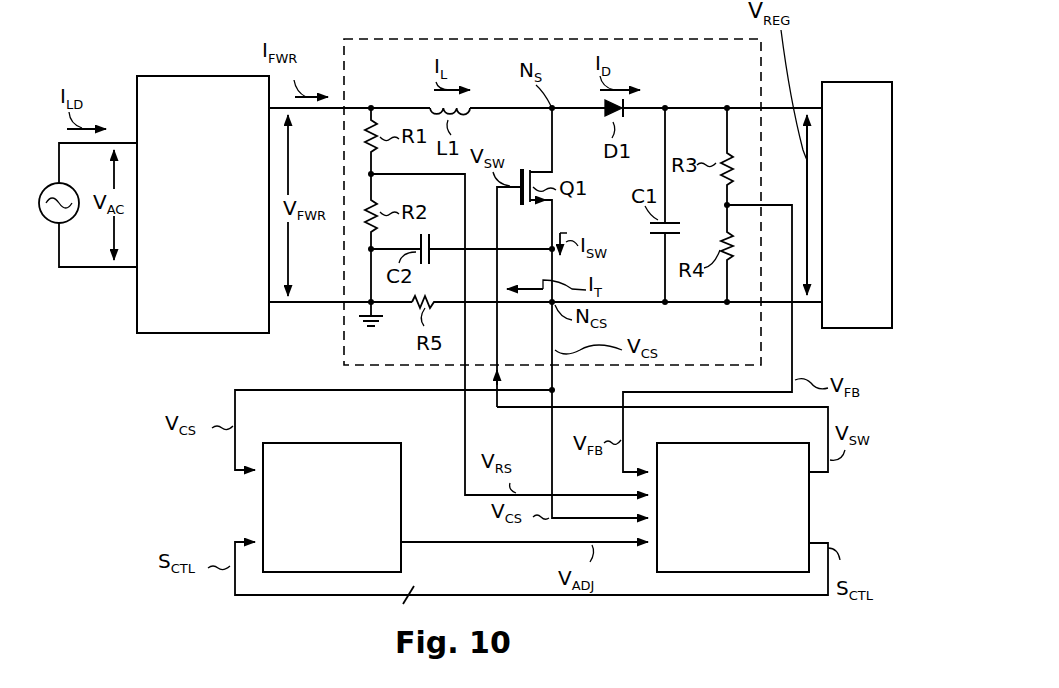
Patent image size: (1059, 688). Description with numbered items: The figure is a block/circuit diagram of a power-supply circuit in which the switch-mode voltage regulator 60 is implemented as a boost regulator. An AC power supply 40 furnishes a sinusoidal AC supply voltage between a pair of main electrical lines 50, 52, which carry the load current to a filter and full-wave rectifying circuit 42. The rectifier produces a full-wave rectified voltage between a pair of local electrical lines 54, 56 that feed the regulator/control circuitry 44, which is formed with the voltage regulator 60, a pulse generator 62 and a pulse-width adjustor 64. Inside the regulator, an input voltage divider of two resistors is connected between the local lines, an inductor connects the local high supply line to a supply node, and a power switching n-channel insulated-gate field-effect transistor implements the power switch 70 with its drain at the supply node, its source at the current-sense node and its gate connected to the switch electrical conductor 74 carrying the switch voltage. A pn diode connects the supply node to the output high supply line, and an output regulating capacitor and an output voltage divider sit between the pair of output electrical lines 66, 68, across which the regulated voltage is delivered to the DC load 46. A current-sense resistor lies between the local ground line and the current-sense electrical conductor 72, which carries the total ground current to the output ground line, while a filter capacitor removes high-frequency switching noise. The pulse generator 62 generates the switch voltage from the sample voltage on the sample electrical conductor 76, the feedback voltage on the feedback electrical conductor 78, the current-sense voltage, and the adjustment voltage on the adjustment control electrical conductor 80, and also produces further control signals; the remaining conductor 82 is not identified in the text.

The AC power supply 40 is at (50, 226).
The filter and full-wave rectifying circuit 42 is at (172, 334).
The regulator/control circuitry 44 is at (426, 425).
The DC load 46 is at (853, 82).
The main electrical line 50 is at (128, 141).
The main electrical line 52 is at (118, 269).
The local electrical line 54 is at (326, 111).
The local electrical line 56 is at (315, 304).
The switch-mode voltage regulator 60 is at (556, 38).
The pulse generator 62 is at (812, 506).
The pulse-width adjustor 64 is at (262, 504).
The output electrical line 66 is at (794, 107).
The output electrical line 68 is at (808, 305).
The power switch 70 is at (543, 160).
The current-sense electrical conductor 72 is at (526, 305).
The switch electrical conductor 74 is at (497, 224).
The sample electrical conductor 76 is at (465, 460).
The feedback electrical conductor 78 is at (624, 426).
The adjustment control electrical conductor 80 is at (448, 545).
The control signal line 82 is at (494, 595).